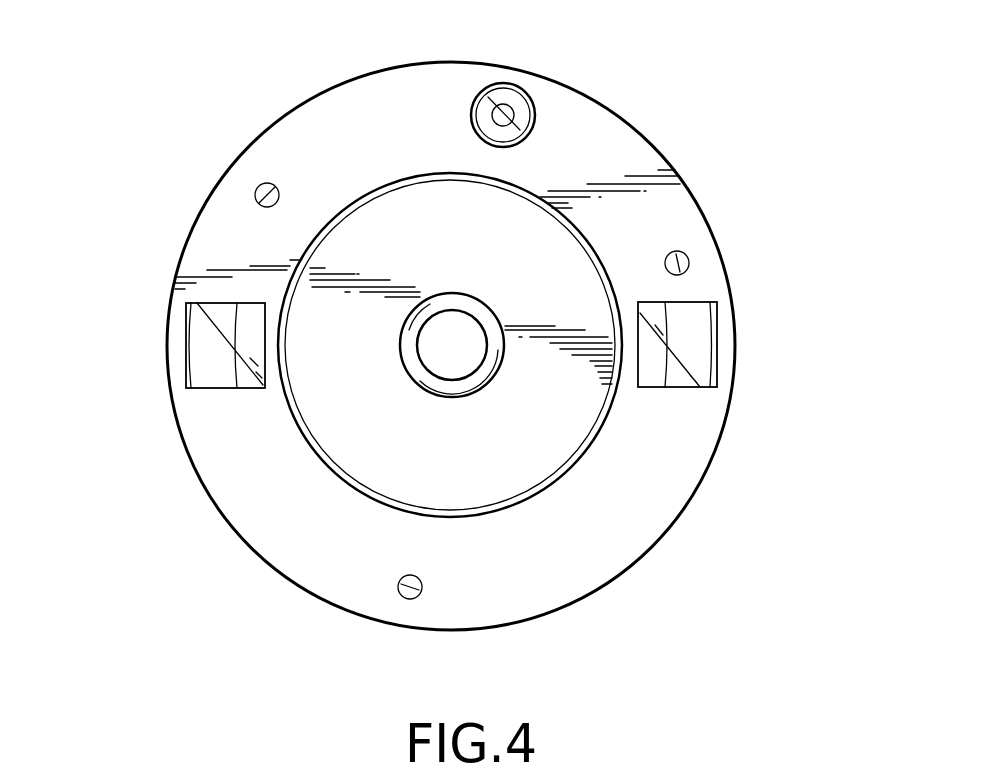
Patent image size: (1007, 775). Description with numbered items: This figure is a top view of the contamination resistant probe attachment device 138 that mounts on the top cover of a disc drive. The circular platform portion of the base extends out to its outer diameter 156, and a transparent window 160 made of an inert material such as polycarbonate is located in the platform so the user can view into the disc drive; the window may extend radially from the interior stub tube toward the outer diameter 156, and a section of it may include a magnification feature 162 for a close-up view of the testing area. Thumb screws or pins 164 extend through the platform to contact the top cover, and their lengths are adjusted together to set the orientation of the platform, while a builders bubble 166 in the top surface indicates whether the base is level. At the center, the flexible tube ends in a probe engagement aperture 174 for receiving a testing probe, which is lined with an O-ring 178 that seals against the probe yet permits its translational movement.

The attachment device 138 is at (471, 321).
The outer diameter 156 is at (705, 417).
The transparent window 160 is at (203, 354).
The magnification feature 162 is at (702, 327).
The thumb screws or pins 164 is at (683, 263).
The builders bubble 166 is at (515, 97).
The probe engagement aperture 174 is at (455, 342).
The O-ring 178 is at (445, 301).